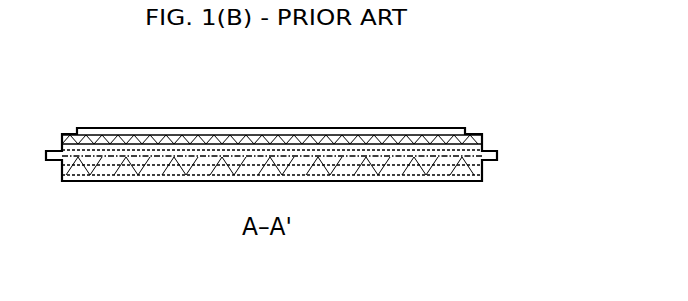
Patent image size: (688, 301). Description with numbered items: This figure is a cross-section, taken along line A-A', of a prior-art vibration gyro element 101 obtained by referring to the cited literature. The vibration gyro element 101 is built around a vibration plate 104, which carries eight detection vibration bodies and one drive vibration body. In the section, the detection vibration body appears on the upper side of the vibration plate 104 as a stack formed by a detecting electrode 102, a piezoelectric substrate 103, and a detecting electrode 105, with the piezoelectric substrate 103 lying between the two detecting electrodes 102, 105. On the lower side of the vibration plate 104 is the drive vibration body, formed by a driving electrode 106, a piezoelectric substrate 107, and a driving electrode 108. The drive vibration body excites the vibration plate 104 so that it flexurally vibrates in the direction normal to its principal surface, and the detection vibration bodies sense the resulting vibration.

The vibration gyro element 101 is at (385, 69).
The detecting electrode 102 is at (178, 128).
The piezoelectric substrate 103 is at (468, 134).
The vibration plate 104 is at (497, 155).
The detecting electrode 105 is at (483, 146).
The driving electrode 106 is at (485, 163).
The piezoelectric substrate 107 is at (480, 174).
The driving electrode 108 is at (398, 182).